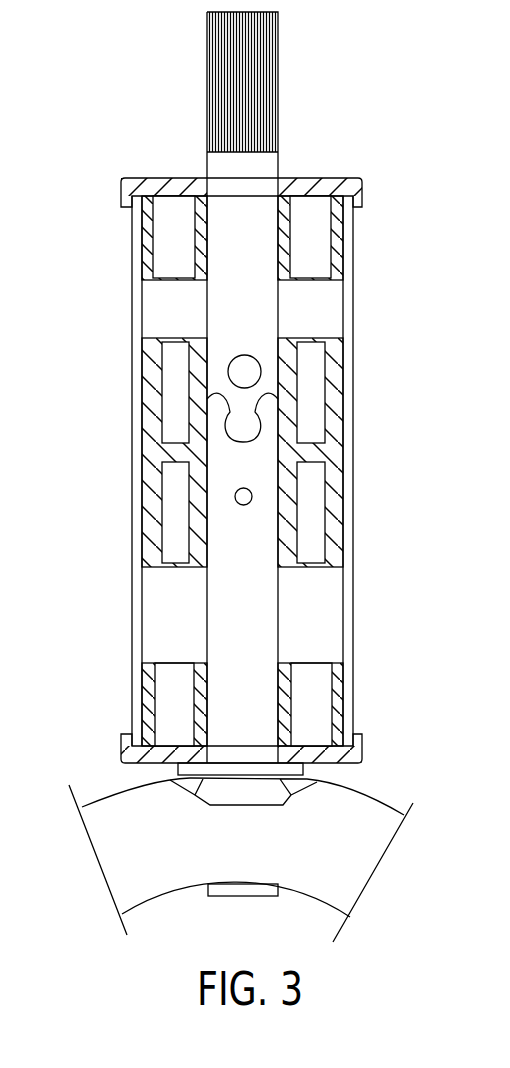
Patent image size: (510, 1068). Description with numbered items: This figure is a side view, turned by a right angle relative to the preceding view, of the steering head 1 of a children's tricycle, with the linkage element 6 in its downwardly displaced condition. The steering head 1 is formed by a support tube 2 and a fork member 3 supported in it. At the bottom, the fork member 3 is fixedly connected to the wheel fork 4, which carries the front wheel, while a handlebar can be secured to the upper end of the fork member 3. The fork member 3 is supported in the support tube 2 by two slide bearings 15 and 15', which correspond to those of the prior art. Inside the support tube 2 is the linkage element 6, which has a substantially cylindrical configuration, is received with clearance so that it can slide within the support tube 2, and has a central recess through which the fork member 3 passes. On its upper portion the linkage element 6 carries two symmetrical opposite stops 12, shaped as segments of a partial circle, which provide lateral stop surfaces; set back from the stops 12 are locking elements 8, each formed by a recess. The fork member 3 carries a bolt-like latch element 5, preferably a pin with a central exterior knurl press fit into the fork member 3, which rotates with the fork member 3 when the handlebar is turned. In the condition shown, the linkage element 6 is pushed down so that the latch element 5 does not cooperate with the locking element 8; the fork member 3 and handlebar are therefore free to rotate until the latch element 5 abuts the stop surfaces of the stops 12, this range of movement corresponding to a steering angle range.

The steering head 1 is at (108, 614).
The support tube 2 is at (137, 365).
The fork member 3 is at (277, 170).
The wheel fork 4 is at (163, 880).
The latch element 5 is at (243, 356).
The linkage element 6 is at (148, 505).
The locking element 8 is at (213, 410).
The stop 12 is at (147, 353).
The slide bearing 15 is at (242, 211).
The slide bearing 15' is at (264, 704).